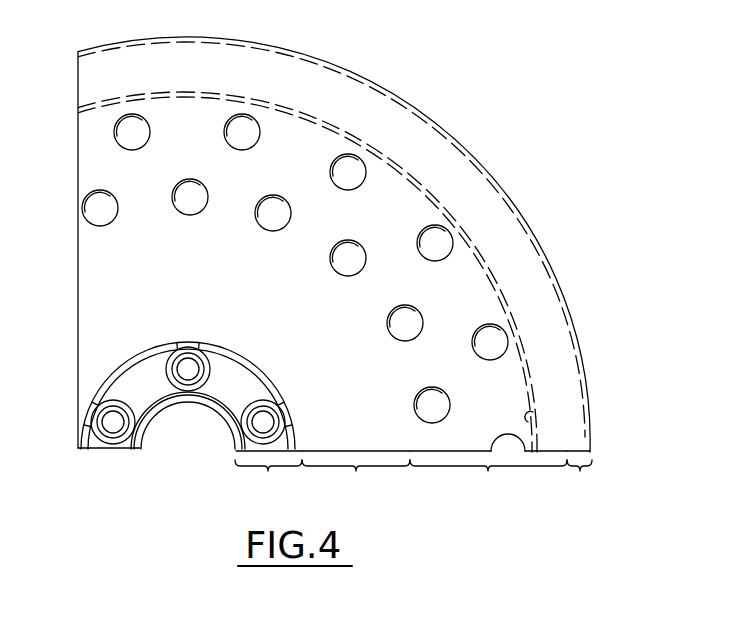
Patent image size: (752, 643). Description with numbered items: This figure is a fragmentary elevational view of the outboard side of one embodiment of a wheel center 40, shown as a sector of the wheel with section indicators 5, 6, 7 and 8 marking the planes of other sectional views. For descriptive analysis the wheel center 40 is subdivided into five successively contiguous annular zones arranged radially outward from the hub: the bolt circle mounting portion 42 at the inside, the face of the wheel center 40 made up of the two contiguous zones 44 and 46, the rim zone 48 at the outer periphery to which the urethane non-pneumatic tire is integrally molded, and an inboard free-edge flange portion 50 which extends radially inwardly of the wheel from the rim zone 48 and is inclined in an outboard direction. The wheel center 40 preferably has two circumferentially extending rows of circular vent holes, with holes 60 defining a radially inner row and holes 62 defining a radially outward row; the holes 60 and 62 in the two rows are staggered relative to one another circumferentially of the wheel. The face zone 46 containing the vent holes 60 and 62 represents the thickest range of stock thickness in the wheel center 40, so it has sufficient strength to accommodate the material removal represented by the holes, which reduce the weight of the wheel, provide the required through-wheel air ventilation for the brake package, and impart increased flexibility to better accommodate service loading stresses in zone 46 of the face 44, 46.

The wheel center 40 is at (533, 172).
The bolt circle mounting portion 42 is at (268, 476).
The face zone 44 is at (356, 476).
The face zone 46 is at (488, 469).
The rim zone 48 is at (575, 478).
The inboard free-edge flange portion 50 is at (533, 402).
The vent holes 60 is at (291, 213).
The vent holes 62 is at (364, 184).
The section line 5- 5 is at (163, 341).
The section line 6- 6 is at (157, 416).
The section line 7- 7 is at (271, 369).
The section line 8- 8 is at (150, 22).